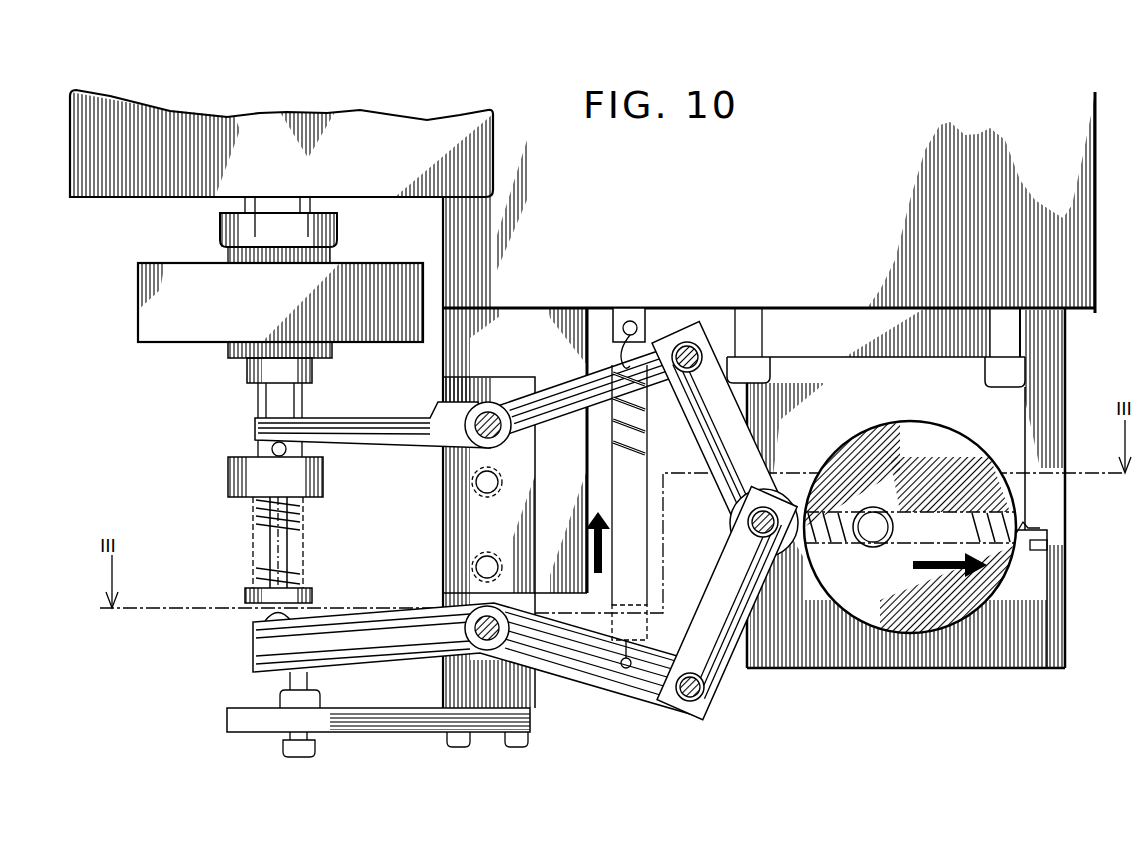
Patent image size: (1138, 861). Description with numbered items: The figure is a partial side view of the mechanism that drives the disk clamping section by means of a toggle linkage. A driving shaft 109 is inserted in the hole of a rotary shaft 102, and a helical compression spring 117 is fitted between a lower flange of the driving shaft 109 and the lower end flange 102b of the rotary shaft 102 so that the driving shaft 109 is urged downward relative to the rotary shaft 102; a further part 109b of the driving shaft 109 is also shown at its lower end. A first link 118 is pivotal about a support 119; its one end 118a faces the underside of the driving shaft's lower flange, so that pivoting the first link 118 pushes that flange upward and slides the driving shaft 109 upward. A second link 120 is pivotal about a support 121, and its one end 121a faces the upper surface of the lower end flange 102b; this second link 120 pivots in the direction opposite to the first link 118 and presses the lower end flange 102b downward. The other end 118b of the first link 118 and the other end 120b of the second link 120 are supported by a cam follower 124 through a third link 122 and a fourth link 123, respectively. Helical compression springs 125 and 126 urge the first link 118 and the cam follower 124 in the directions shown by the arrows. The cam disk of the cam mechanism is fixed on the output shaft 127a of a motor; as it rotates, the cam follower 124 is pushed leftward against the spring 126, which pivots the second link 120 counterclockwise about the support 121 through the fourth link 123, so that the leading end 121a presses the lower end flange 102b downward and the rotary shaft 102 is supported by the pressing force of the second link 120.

The rotary shaft 102 is at (258, 400).
The lower end flange of the rotary shaft 102b is at (323, 478).
The driving shaft 109 is at (272, 548).
The stopper 109b is at (247, 598).
The helical compression spring 117 is at (303, 512).
The first link 118 is at (548, 665).
The one end of the first link 118a is at (253, 622).
The other end of the first link 118b is at (707, 698).
The support 119 is at (470, 636).
The second link 120 is at (558, 398).
The other end of the second link 120b is at (688, 340).
The support 121 is at (485, 405).
The one end of the second link 121a is at (263, 448).
The third link 122 is at (727, 586).
The fourth link 123 is at (722, 418).
The cam follower 124 is at (778, 490).
The helical compression spring 125 is at (610, 366).
The helical compression spring 126 is at (828, 545).
The output shaft of the motor 127a is at (873, 540).